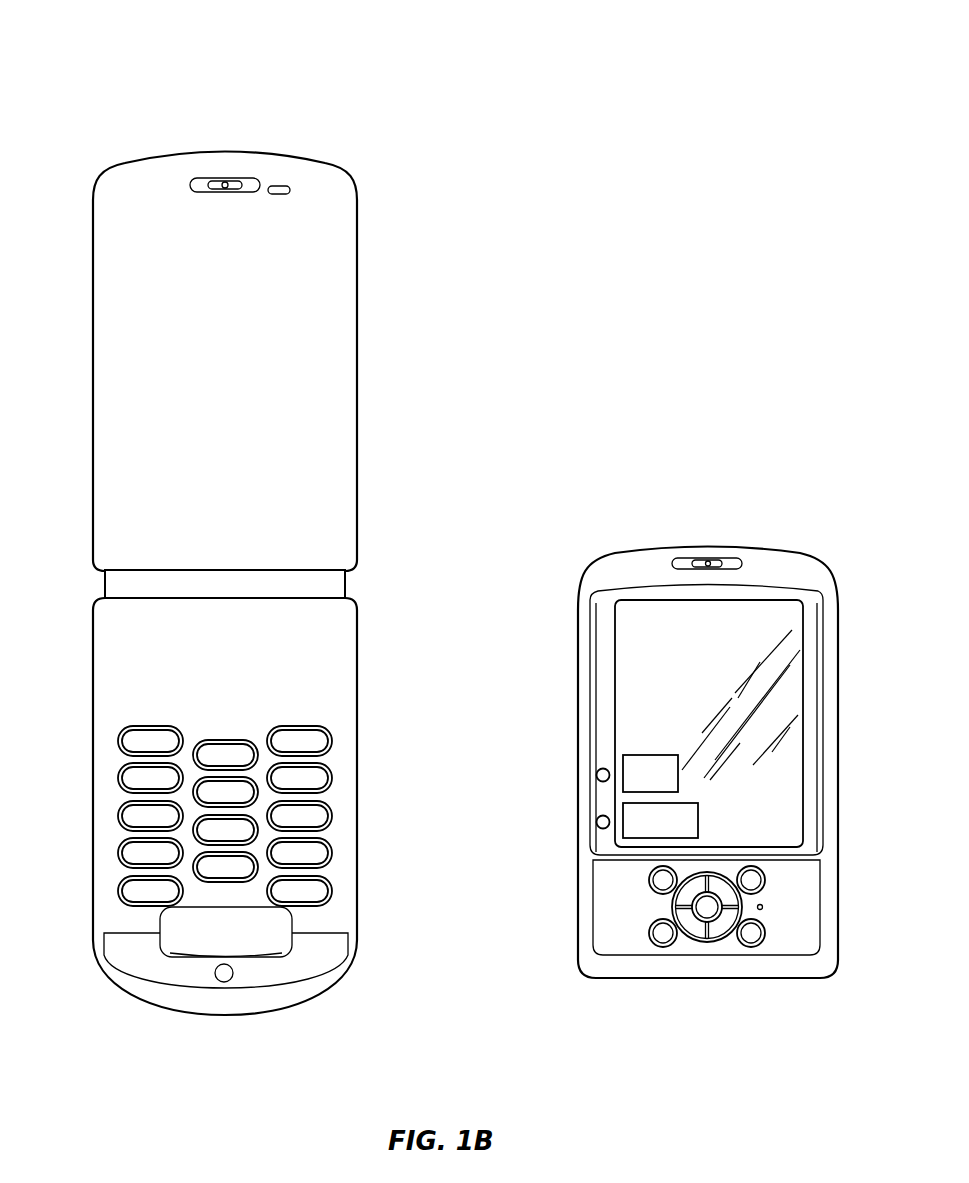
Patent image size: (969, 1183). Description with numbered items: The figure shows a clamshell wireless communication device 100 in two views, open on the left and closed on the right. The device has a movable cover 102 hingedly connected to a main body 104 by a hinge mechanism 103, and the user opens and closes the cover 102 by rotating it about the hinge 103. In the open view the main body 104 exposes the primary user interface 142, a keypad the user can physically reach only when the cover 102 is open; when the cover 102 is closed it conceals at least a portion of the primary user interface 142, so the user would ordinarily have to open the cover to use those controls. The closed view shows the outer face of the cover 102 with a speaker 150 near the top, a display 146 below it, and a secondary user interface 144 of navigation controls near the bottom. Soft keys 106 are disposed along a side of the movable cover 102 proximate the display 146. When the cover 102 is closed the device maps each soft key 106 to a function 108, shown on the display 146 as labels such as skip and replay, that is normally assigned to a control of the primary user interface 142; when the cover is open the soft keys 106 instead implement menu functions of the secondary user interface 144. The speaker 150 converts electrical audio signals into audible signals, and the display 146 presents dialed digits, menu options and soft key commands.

The wireless communication device 100 is at (255, 82).
The movable cover 102 is at (357, 228).
The hinge mechanism 103 is at (310, 583).
The main body 104 is at (262, 1012).
The primary user interface 142 is at (289, 716).
The speaker 150 is at (700, 560).
The display 146 is at (628, 652).
The soft keys 106 is at (599, 817).
The function 108 is at (667, 754).
The secondary user interface 144 is at (783, 907).